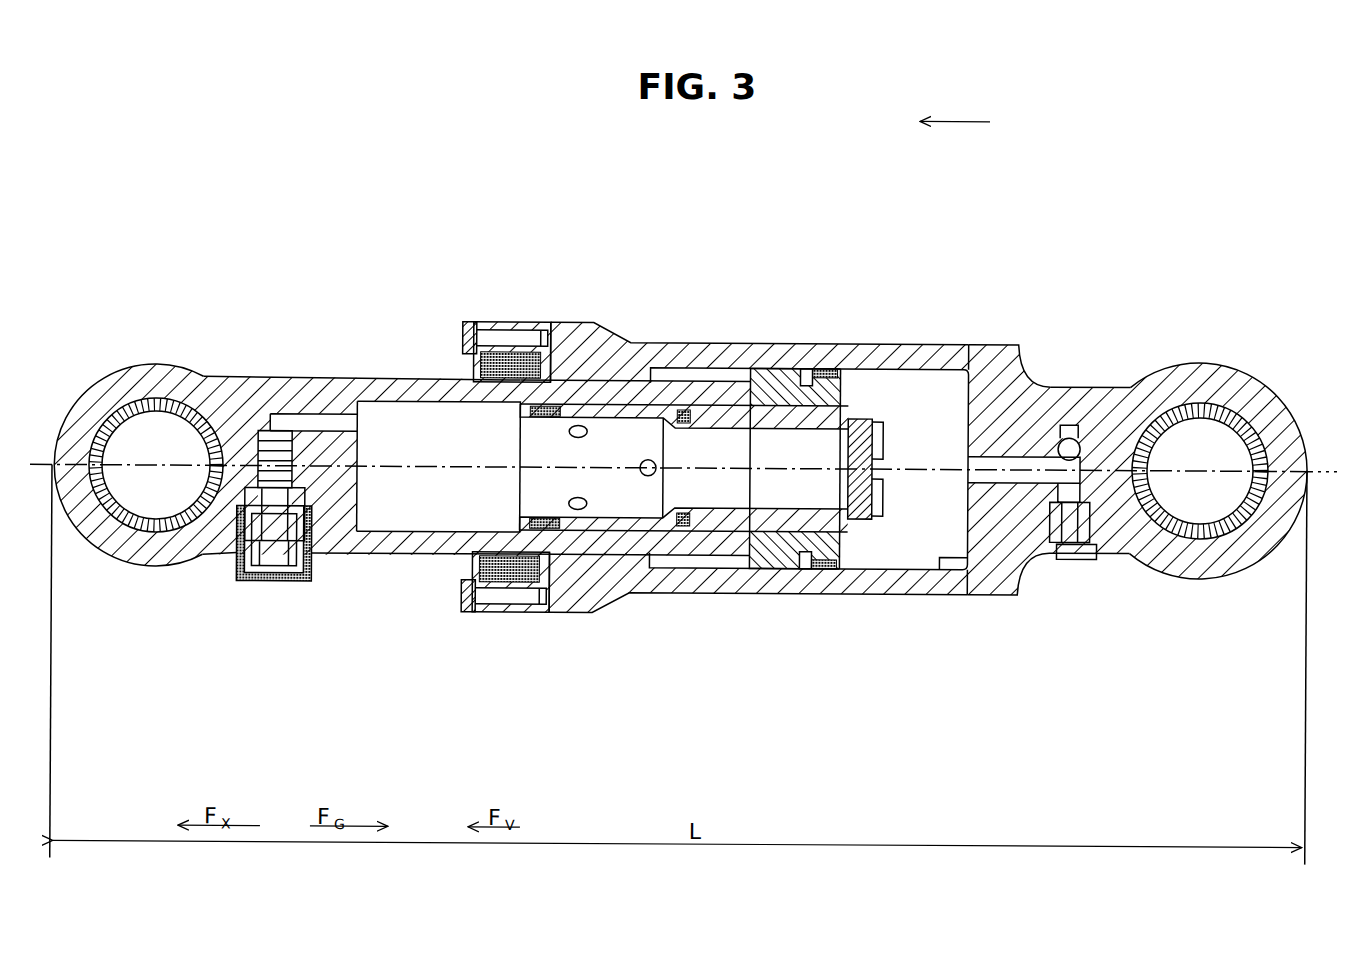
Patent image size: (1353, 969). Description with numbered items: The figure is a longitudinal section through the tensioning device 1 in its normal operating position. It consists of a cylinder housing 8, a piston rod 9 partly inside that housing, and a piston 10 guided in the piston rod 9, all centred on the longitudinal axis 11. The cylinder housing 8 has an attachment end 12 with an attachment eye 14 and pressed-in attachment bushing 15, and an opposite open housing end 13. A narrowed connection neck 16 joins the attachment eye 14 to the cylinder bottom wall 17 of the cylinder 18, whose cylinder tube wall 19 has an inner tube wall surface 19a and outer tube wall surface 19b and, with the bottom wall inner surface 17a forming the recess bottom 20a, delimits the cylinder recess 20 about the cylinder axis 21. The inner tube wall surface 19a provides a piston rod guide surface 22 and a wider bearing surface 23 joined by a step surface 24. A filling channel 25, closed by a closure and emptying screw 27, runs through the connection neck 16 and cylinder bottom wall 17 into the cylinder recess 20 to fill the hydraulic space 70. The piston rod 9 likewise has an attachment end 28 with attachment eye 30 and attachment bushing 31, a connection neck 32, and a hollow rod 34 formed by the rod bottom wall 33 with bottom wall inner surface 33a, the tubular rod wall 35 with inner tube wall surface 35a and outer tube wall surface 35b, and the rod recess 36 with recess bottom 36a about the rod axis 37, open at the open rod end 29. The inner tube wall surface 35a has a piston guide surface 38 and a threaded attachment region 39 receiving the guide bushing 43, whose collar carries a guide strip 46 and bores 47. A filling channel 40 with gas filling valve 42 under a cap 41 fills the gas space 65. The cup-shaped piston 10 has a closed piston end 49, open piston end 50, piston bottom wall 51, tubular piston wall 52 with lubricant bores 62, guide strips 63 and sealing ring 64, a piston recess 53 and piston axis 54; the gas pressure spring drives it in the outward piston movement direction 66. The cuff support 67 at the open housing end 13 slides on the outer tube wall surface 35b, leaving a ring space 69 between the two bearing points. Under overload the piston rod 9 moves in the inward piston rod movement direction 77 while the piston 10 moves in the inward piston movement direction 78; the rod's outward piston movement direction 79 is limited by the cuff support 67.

The tensioning device 1 is at (205, 175).
The cylinder housing 8 is at (889, 343).
The piston rod 9 is at (412, 388).
The piston 10 is at (655, 575).
The longitudinal axis 11 is at (1256, 668).
The attachment end 12 is at (1274, 358).
The open housing end 13 is at (497, 290).
The attachment eye 14 is at (1232, 368).
The attachment bushing 15 is at (1213, 530).
The connection neck 16 is at (1087, 400).
The cylinder bottom wall 17 is at (985, 380).
The bottom wall inner surface 17a is at (841, 605).
The cylinder 18 is at (750, 342).
The cylinder tube wall 19 is at (856, 396).
The inner tube wall surface 19a is at (884, 646).
The outer tube wall surface 19b is at (701, 594).
The cylinder recess 20 is at (917, 536).
The recess bottom 20a is at (966, 544).
The cylinder axis 21 is at (1256, 668).
The piston rod guide surface 22 is at (893, 564).
The bearing surface 23 is at (575, 612).
The step surface 24 is at (548, 323).
The filling channel 25 is at (1028, 473).
The closure and emptying screw 27 is at (1073, 552).
The attachment end 28 is at (85, 352).
The open rod end 29 is at (802, 558).
The attachment eye 30 is at (150, 381).
The attachment bushing 31 is at (112, 513).
The connection neck 32 is at (243, 420).
The rod bottom wall 33 is at (347, 490).
The bottom wall inner surface 33a is at (406, 597).
The hollow rod 34 is at (441, 388).
The tubular rod wall 35 is at (376, 388).
The inner tube wall surface 35a is at (601, 625).
The outer tube wall surface 35b is at (347, 372).
The rod recess 36 is at (437, 500).
The recess bottom 36a is at (362, 500).
The rod axis 37 is at (1305, 468).
The piston guide surface 38 is at (400, 525).
The attachment region 39 is at (775, 399).
The filling channel 40 is at (303, 420).
The cap 41 is at (240, 576).
The gas filling valve 42 is at (277, 535).
The guide bushing 43 is at (826, 363).
The guide strip 46 is at (804, 392).
The bores 47 is at (830, 555).
The closed piston end 49 is at (894, 394).
The open piston end 50 is at (516, 502).
The piston bottom wall 51 is at (863, 446).
The tubular piston wall 52 is at (612, 398).
The piston recess 53 is at (708, 443).
The piston axis 54 is at (1332, 468).
The lubricant bores 62 is at (579, 424).
The guide strip 63 is at (712, 373).
The sealing ring 64 is at (655, 396).
The gas space 65 is at (391, 420).
The outward piston movement direction 66 is at (1047, 277).
The cuff support 67 is at (500, 368).
The ring space 69 is at (663, 568).
The hydraulic space 70 is at (918, 404).
The inward piston rod movement direction 77 is at (1085, 117).
The inward piston movement direction 78 is at (955, 107).
The outward piston movement direction 79 is at (955, 107).